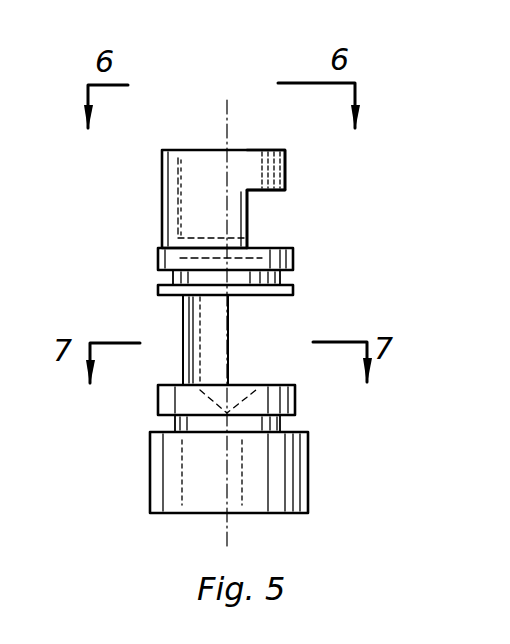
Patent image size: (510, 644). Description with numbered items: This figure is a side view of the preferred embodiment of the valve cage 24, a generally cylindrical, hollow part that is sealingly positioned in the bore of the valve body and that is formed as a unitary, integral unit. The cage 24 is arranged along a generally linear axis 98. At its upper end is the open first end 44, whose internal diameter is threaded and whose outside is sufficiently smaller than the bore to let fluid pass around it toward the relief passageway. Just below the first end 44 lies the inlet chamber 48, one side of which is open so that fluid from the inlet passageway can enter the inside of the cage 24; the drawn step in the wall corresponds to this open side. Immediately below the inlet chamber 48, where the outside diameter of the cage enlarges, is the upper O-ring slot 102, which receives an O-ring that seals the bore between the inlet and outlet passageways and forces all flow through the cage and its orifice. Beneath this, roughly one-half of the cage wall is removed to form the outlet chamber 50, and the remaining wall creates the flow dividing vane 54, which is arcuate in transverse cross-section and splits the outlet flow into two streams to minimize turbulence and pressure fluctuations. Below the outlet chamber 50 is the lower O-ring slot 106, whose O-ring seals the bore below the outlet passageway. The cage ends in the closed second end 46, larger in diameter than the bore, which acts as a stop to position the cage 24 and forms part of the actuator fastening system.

The valve cage 24 is at (134, 231).
The open first end 44 is at (265, 175).
The closed second end 46 is at (172, 493).
The inlet chamber 48 is at (268, 220).
The outlet chamber 50 is at (252, 363).
The flow dividing vane 54 is at (210, 330).
The axis 98 is at (229, 126).
The upper O-ring slot 102 is at (283, 276).
The lower O-ring slot 106 is at (285, 422).